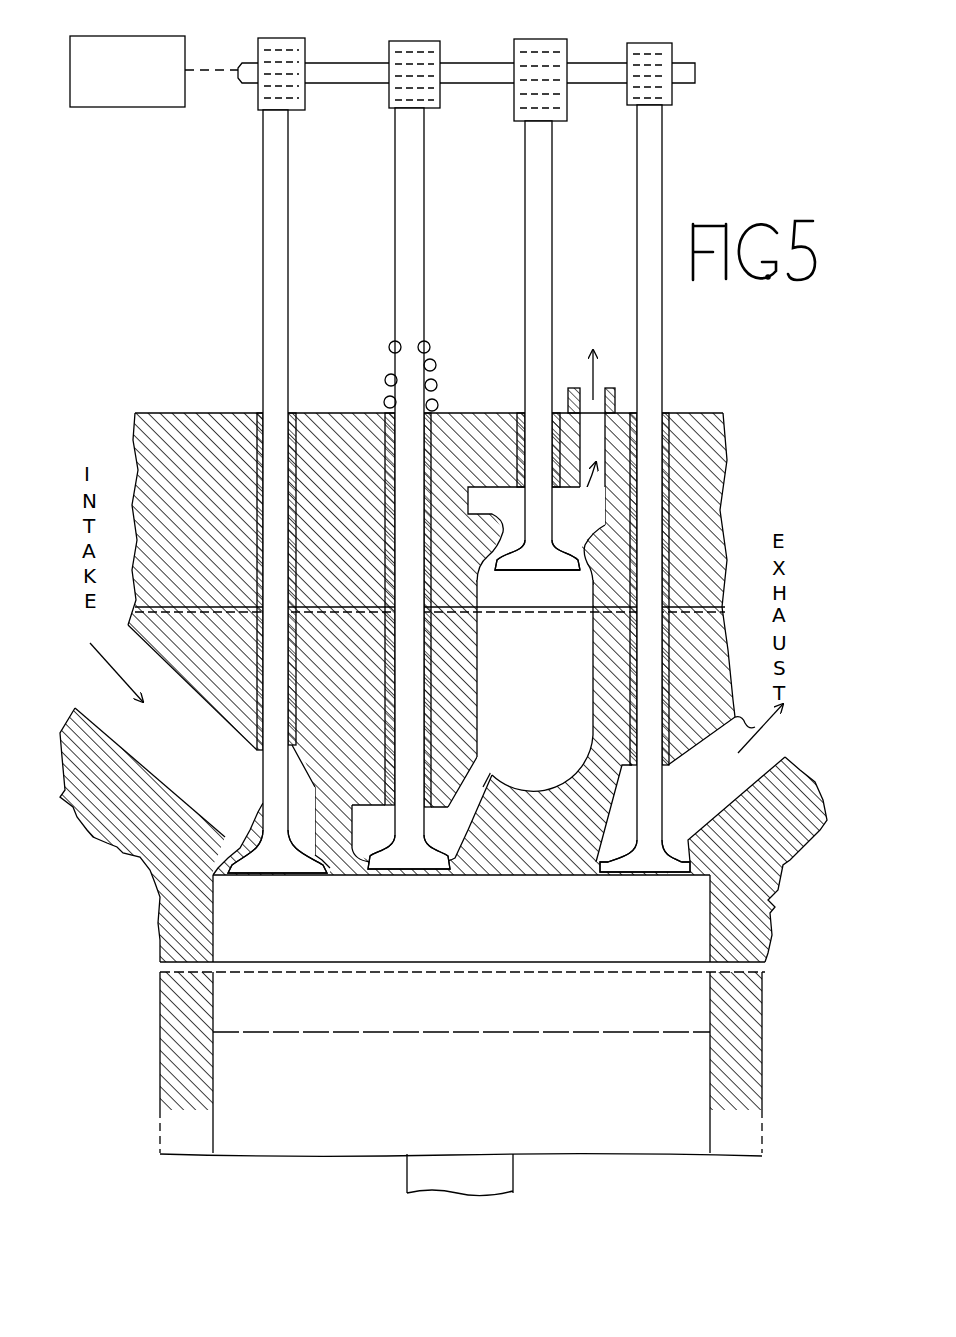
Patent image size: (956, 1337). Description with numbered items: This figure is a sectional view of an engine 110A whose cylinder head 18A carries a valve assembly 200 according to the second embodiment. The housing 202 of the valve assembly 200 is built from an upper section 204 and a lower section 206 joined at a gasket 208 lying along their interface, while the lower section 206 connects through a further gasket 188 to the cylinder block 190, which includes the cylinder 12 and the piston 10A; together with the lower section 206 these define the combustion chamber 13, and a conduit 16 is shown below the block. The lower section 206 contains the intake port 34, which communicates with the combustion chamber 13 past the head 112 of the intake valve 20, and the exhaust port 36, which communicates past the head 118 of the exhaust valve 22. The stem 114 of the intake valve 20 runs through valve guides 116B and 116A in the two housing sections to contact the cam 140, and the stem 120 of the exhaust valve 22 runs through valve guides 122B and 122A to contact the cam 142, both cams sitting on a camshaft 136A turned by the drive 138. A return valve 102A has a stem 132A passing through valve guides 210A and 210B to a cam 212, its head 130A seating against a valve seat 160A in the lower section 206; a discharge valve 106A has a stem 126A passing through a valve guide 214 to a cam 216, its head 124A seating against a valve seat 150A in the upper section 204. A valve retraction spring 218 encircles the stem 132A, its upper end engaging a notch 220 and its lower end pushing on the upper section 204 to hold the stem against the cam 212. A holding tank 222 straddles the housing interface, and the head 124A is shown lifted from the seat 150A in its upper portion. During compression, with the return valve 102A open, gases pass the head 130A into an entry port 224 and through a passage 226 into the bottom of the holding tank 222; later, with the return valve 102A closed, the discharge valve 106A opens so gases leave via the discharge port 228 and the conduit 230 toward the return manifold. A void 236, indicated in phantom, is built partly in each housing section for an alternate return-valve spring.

The piston 10A is at (320, 1157).
The cylinder 12 is at (160, 1070).
The combustion chamber 13 is at (624, 1012).
The conduit 16 is at (515, 1171).
The cylinder head 18A is at (110, 858).
The intake valve 20 is at (298, 880).
The exhaust valve 22 is at (657, 880).
The intake port 34 is at (108, 706).
The exhaust port 36 is at (762, 748).
The return valve 102A is at (385, 880).
The discharge valve 106A is at (524, 318).
The engine 110A is at (154, 929).
The head of the intake valve 112 is at (273, 880).
The stem of the intake valve 114 is at (263, 243).
The valve guide 116A is at (262, 412).
The valve guide 116B is at (259, 752).
The head of the exhaust valve 118 is at (622, 878).
The stem of the exhaust valve 120 is at (636, 209).
The valve guide 122A is at (668, 412).
The valve guide 122B is at (668, 768).
The head of the discharge valve 124A is at (508, 578).
The stem of the discharge valve 126A is at (525, 266).
The head of the return valve 130A is at (408, 878).
The stem of the return valve 132A is at (426, 214).
The camshaft 136A is at (245, 80).
The drive 138 is at (97, 108).
The cam 140 is at (258, 96).
The cam 142 is at (628, 100).
The valve seat 150A is at (585, 560).
The valve seat 160A is at (440, 878).
The gasket 188 is at (158, 968).
The cylinder block 190 is at (763, 1056).
The valve assembly 200 is at (154, 393).
The housing 202 is at (130, 435).
The upper section 204 is at (178, 412).
The lower section 206 is at (758, 900).
The gasket 208 is at (728, 607).
The valve guide 210A is at (388, 782).
The valve guide 210B is at (440, 432).
The cam 212 is at (392, 108).
The valve guide 214 is at (518, 410).
The cam 216 is at (516, 116).
The valve retraction spring 218 is at (386, 393).
The notch 220 is at (390, 347).
The holding tank 222 is at (534, 686).
The entry port 224 is at (362, 878).
The passage 226 is at (500, 790).
The discharge port 228 is at (504, 511).
The conduit 230 is at (620, 408).
The void 236 is at (380, 660).